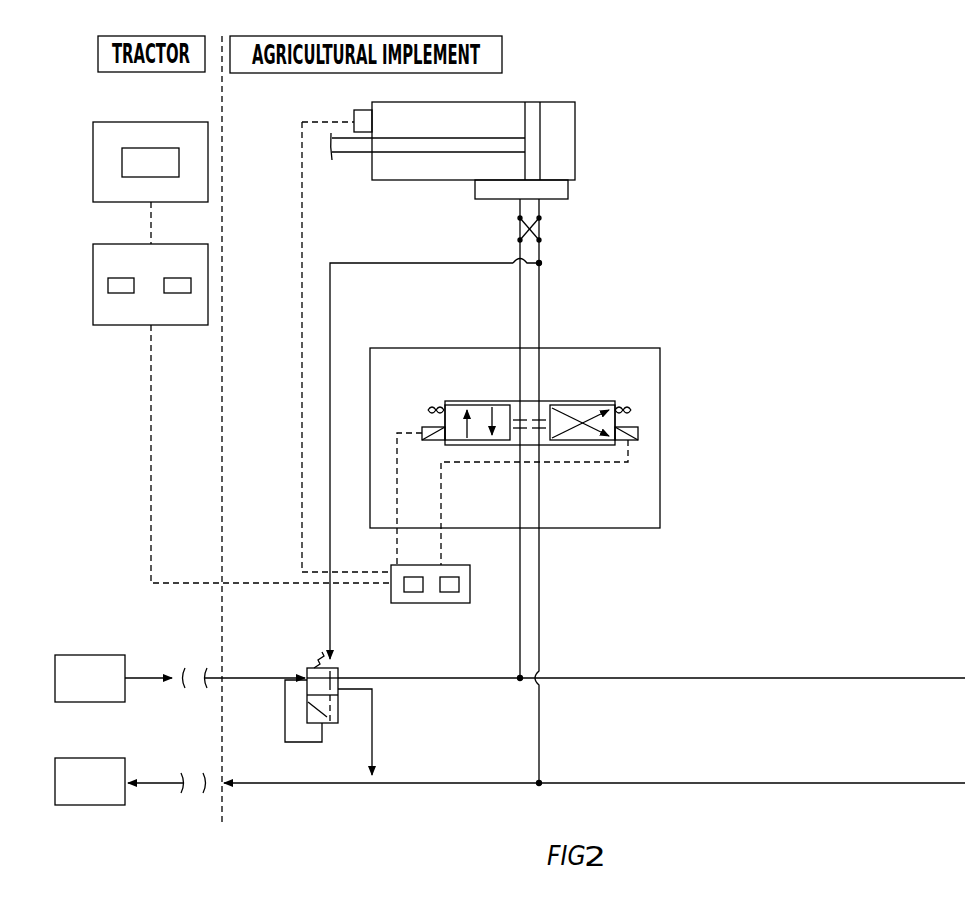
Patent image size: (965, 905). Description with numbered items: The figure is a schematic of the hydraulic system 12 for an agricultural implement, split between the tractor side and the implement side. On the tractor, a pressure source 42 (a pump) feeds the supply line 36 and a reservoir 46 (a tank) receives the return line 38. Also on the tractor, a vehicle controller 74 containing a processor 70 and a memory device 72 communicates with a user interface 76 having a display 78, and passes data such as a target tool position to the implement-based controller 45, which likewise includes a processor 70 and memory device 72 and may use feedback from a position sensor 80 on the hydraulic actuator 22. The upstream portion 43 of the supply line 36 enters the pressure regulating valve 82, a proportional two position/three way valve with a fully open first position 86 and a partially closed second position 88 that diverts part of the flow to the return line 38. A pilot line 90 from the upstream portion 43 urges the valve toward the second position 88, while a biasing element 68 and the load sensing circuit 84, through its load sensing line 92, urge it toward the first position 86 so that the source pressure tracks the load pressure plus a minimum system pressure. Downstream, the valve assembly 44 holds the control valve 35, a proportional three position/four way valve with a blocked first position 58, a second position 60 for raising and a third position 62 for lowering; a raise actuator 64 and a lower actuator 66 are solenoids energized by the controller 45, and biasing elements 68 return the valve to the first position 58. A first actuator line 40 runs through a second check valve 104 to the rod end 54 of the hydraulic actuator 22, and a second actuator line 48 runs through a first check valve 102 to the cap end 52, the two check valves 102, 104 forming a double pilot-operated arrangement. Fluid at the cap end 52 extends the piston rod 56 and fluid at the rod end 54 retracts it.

The hydraulic system 12 is at (562, 42).
The hydraulic actuator 22 is at (432, 102).
The control valve 35 is at (590, 405).
The supply line 36 is at (800, 676).
The return line 38 is at (800, 781).
The first actuator line 40 is at (519, 281).
The pressure source 42 is at (90, 655).
The upstream portion of the supply line 43 is at (248, 672).
The valve assembly 44 is at (608, 348).
The controller 45 is at (445, 604).
The reservoir 46 is at (90, 806).
The second actuator line 48 is at (541, 281).
The cap end 52 is at (591, 130).
The rod end 54 is at (432, 184).
The piston rod 56 is at (349, 136).
The first position 58 is at (510, 405).
The second position 60 is at (562, 410).
The third position 62 is at (467, 404).
The raise actuator 64 is at (640, 432).
The lower actuator 66 is at (437, 442).
The biasing element 68 is at (438, 404).
The processor 70 is at (121, 278).
The memory device 72 is at (177, 278).
The vehicle controller 74 is at (93, 283).
The user interface 76 is at (93, 156).
The display 78 is at (150, 148).
The position sensor 80 is at (363, 110).
The pressure regulating valve 82 is at (340, 667).
The load sensing circuit 84 is at (310, 337).
The first position 86 is at (345, 673).
The second position 88 is at (338, 712).
The pilot line 90 is at (285, 716).
The load sensing line 92 is at (371, 265).
The first check valve 102 is at (542, 221).
The second check valve 104 is at (517, 221).